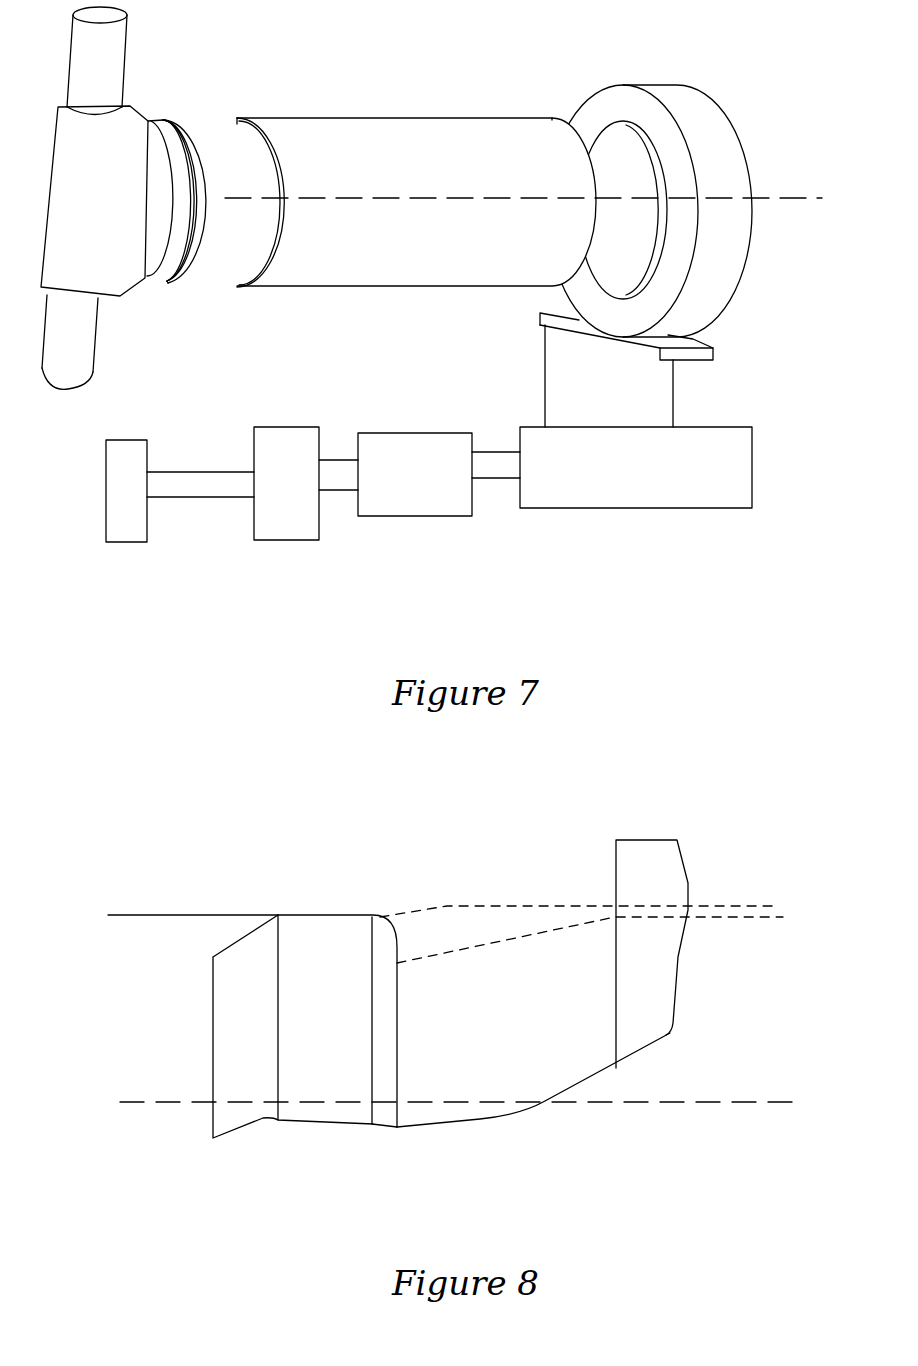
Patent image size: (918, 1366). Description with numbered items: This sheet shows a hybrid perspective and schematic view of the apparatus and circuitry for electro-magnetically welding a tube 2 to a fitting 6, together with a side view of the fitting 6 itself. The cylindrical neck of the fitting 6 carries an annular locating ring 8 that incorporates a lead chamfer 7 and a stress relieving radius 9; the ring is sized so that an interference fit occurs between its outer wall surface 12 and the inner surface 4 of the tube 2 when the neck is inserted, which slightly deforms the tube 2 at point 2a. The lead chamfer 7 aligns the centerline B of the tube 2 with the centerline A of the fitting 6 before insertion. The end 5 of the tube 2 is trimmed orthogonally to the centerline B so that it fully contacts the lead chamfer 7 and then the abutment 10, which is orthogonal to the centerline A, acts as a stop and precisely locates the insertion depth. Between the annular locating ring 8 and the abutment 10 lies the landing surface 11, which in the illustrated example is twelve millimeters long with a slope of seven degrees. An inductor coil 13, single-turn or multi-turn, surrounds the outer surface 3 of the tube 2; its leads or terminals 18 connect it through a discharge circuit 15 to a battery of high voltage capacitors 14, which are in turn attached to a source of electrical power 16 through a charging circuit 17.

In FIG. 7, the tube 2 is at (360, 117).
In FIG. 7, the point of deformation of tube 2a is at (153, 280).
In FIG. 7, the outer surface of tube 3 is at (433, 177).
In FIG. 7, the inner surface of tube 4 is at (262, 196).
In FIG. 7, the end of tube 5 is at (197, 148).
In FIG. 7, the fitting 6 is at (96, 197).
In FIG. 8, the fitting 6 is at (450, 1088).
In FIG. 7, the lead chamfer 7 is at (177, 120).
In FIG. 8, the lead chamfer 7 is at (243, 1088).
In FIG. 7, the annular locating ring 8 is at (155, 118).
In FIG. 8, the annular locating ring 8 is at (307, 1088).
In FIG. 8, the stress relieving radius 9 is at (378, 1088).
In FIG. 7, the abutment surface 10 is at (173, 257).
In FIG. 8, the abutment surface 10 is at (643, 1023).
In FIG. 8, the landing surface 11 is at (477, 947).
In FIG. 7, the outer wall surface 12 is at (202, 220).
In FIG. 7, the inductor coil 13 is at (663, 93).
In FIG. 7, the high voltage capacitors 14 is at (430, 488).
In FIG. 7, the discharge circuit 15 is at (637, 485).
In FIG. 7, the source of electrical power 16 is at (144, 510).
In FIG. 7, the charging circuit 17 is at (304, 498).
In FIG. 7, the leads or terminals 18 is at (672, 406).
In FIG. 8, the centerline of fitting A is at (650, 1102).
In FIG. 7, the centerline of tube B is at (806, 200).